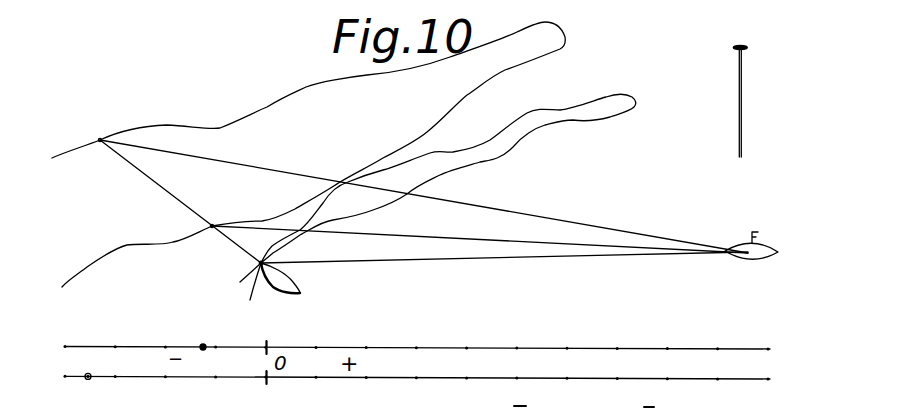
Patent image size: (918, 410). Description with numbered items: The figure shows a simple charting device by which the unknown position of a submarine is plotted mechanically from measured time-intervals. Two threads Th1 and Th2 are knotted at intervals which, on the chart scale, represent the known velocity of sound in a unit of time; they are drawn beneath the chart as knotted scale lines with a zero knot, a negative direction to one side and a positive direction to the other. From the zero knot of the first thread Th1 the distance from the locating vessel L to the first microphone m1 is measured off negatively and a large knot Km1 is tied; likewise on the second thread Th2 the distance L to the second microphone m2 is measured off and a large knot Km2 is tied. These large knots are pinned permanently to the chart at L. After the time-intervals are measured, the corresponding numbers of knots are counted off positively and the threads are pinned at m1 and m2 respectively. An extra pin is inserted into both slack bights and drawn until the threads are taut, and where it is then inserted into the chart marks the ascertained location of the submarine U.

The first thread Th1 is at (436, 229).
The second thread Th2 is at (430, 209).
The first submerged microphone m1 is at (405, 250).
The second submerged microphone m2 is at (413, 200).
The locating vessel L is at (491, 276).
The submarine U is at (751, 259).
The large knot on first thread Km1 is at (222, 336).
The large knot on second thread Km2 is at (97, 391).